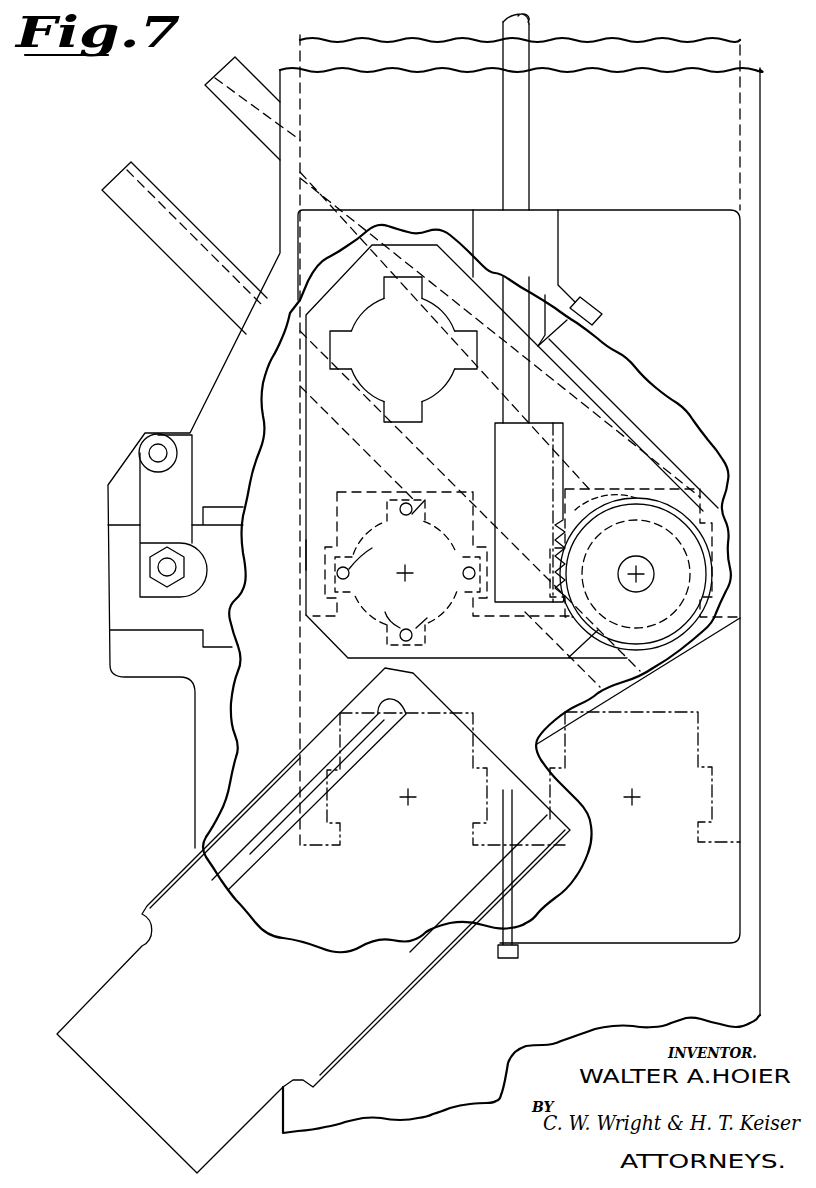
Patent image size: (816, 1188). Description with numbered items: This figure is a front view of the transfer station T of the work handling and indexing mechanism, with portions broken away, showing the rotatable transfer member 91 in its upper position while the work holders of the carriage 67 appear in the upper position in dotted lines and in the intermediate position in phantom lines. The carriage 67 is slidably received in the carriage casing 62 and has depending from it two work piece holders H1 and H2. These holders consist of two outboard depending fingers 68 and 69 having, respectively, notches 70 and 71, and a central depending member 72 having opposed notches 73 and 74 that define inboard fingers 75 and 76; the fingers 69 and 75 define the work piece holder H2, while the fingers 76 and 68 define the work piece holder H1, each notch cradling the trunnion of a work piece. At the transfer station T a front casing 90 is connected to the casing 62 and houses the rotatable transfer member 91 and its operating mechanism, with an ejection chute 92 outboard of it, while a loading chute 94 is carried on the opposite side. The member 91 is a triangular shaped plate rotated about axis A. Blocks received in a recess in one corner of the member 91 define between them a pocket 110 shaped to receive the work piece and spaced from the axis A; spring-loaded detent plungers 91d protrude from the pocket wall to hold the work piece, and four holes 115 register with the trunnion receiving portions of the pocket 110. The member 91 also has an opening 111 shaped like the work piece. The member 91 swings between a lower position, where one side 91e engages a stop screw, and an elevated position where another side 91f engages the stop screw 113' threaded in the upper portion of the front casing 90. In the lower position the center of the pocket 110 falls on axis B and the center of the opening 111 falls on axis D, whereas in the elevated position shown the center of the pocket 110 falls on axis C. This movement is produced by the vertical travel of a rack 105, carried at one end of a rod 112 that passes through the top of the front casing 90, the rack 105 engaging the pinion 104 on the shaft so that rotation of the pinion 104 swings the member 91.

The casing 62 is at (760, 78).
The carriage 67 is at (740, 44).
The outboard depending finger 68 is at (718, 845).
The outboard depending finger 69 is at (312, 848).
The notch 70 is at (700, 804).
The notch 71 is at (340, 812).
The central depending member 72 is at (525, 732).
The notch 73 is at (560, 800).
The notch 74 is at (478, 810).
The inboard finger 75 is at (475, 848).
The inboard finger 76 is at (560, 840).
The front casing 90 is at (665, 210).
The rotatable transfer member 91 is at (350, 660).
The detent plungers 91d is at (400, 564).
The side of rotatable member 91e is at (306, 555).
The side of rotatable member 91f is at (583, 383).
The ejection chute 92 is at (80, 1062).
The loading chute 94 is at (162, 248).
The pinion 104 is at (600, 497).
The rack 105 is at (535, 487).
The pocket 110 is at (440, 620).
The opening 111 is at (420, 336).
The rod 112 is at (529, 145).
The stop screw 113' is at (602, 316).
The holes 115 is at (406, 572).
The axis A is at (636, 574).
The axis B is at (641, 792).
The axis C is at (414, 572).
The axis D is at (418, 793).
The work piece holder H1 is at (745, 489).
The work piece holder H2 is at (337, 522).
The transfer station T is at (224, 340).